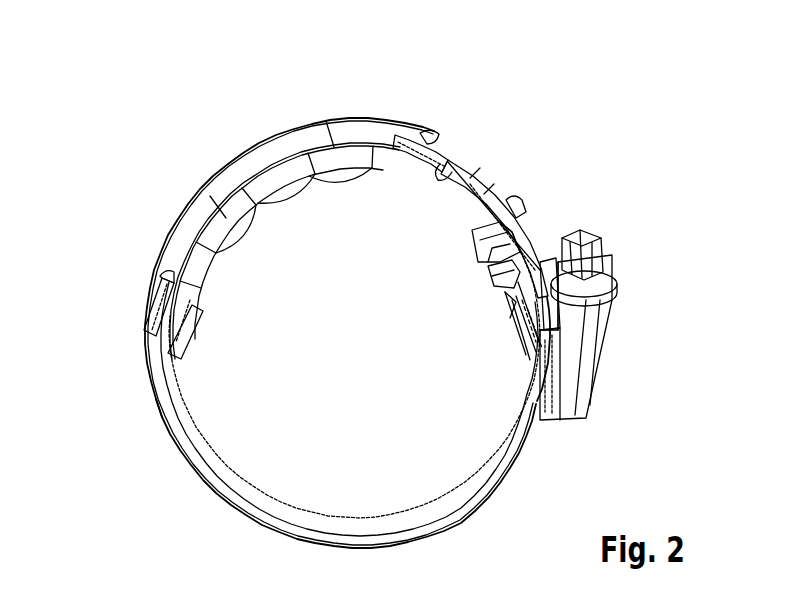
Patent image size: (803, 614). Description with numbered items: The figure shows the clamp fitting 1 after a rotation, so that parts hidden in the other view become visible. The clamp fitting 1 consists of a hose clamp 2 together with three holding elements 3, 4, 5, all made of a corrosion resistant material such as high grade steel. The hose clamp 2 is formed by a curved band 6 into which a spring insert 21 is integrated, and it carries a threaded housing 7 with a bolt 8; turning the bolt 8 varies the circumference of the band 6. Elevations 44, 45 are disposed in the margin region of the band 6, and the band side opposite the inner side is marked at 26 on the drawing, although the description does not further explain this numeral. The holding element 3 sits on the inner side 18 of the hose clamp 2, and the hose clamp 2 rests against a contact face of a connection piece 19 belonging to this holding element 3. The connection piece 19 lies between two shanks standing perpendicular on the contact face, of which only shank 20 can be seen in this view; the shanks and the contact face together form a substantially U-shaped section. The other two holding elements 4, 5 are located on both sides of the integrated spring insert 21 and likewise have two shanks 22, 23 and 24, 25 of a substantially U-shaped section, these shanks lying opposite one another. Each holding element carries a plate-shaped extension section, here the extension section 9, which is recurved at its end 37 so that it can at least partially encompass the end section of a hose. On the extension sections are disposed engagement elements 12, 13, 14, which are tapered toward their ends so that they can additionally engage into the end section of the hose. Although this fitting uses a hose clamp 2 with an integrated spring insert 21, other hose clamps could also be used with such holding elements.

The clamp fitting 1 is at (568, 117).
The hose clamp 2 is at (181, 483).
The holding element 3 is at (503, 294).
The holding element 4 is at (434, 126).
The holding element 5 is at (153, 272).
The curved band 6 is at (290, 538).
The threaded housing 7 is at (612, 306).
The bolt 8 is at (598, 240).
The extension section 9 is at (476, 244).
The engagement element 12 is at (486, 270).
The engagement element 13 is at (520, 194).
The engagement element 14 is at (442, 160).
The inner side 18 is at (390, 514).
The connection piece 19 is at (510, 320).
The shank 20 is at (546, 262).
The spring insert 21 is at (246, 232).
The shank 22 is at (150, 300).
The shank 23 is at (197, 328).
The shank 24 is at (417, 134).
The shank 25 is at (475, 185).
The outer side 26 is at (172, 404).
The end 37 is at (484, 240).
The elevation 44 is at (193, 210).
The elevation 45 is at (320, 138).